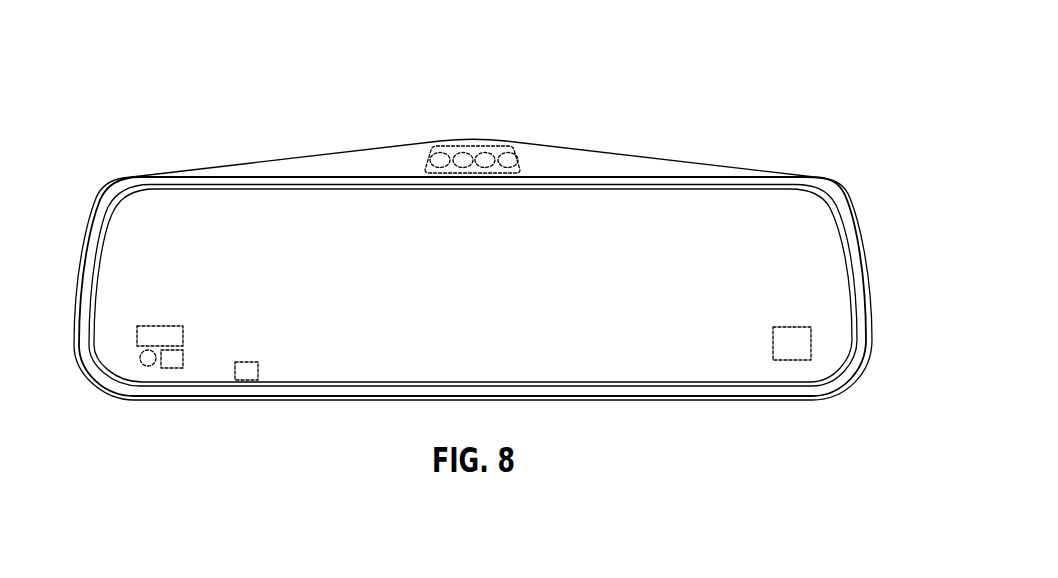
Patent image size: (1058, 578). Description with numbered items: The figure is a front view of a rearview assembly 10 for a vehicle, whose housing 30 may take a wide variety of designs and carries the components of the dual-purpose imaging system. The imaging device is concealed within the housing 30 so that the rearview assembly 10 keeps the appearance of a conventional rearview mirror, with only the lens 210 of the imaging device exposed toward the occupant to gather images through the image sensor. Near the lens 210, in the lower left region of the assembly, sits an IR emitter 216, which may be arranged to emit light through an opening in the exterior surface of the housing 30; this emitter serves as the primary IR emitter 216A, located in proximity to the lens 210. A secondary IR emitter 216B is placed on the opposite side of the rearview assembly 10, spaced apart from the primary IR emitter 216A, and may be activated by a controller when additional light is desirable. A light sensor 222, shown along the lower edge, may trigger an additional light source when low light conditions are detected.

The rearview assembly 10 is at (797, 82).
The housing 30 is at (686, 162).
The IR emitter 216 is at (148, 333).
The primary IR emitter 216A is at (175, 358).
The secondary IR emitter 216B is at (793, 337).
The lens 210 is at (140, 363).
The light sensor 222 is at (243, 377).